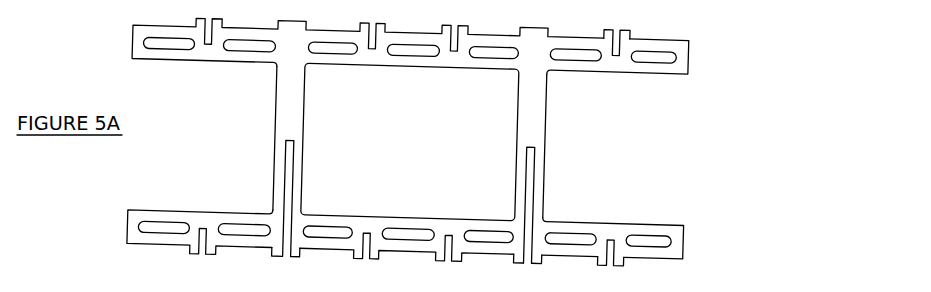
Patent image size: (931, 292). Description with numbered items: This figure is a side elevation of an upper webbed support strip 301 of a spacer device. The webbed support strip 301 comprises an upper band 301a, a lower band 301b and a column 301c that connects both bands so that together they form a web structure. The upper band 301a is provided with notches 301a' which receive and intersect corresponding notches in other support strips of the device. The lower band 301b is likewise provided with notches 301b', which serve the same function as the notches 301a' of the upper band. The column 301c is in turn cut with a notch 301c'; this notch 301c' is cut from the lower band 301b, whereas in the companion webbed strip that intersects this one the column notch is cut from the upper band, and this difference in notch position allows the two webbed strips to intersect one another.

The webbed support strip 301 is at (684, 143).
The upper band 301a is at (444, 39).
The notches 301a' is at (641, 28).
The lower band 301b is at (443, 249).
The notches 301b' is at (640, 266).
The column 301c is at (440, 177).
The notch 301c' is at (497, 219).